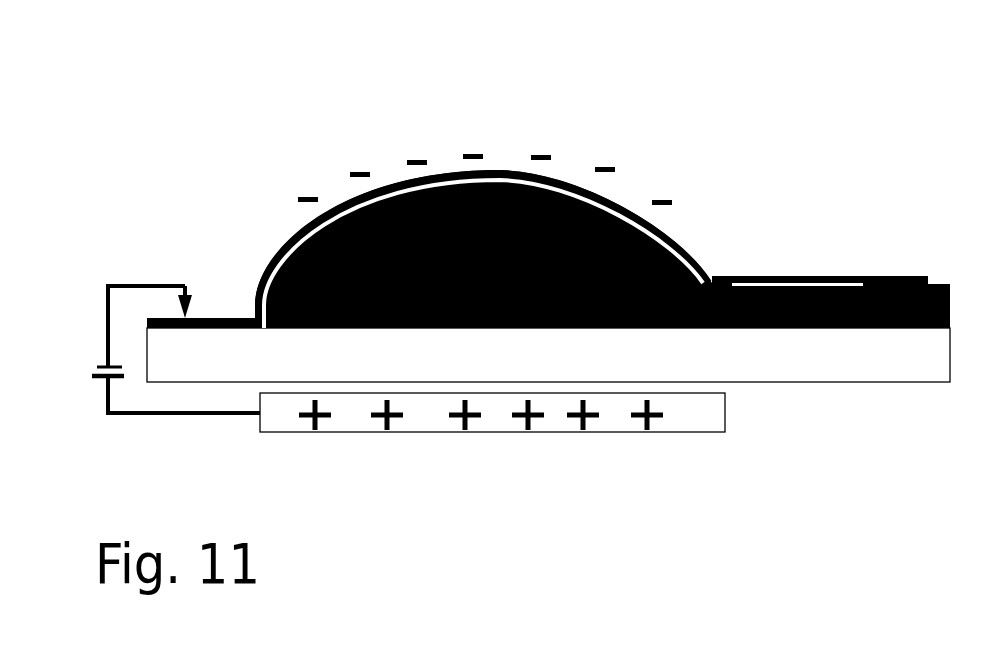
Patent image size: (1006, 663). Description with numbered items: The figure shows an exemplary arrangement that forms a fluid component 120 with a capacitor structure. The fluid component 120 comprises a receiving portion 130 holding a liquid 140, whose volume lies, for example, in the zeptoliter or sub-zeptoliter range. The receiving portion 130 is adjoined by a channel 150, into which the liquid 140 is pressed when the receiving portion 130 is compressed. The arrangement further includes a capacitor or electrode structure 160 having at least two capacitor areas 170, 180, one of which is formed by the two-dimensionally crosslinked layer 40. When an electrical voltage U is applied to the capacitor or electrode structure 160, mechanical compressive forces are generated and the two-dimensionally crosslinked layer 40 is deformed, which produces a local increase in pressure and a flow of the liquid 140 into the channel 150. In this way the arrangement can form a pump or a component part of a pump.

The fluid component 120 is at (363, 96).
The two-dimensionally crosslinked layer 40 is at (507, 172).
The receiving portion 130 is at (680, 240).
The liquid 140 is at (620, 195).
The capacitor area 170 is at (293, 240).
The capacitor or electrode structure 160 is at (273, 262).
The channel 150 is at (867, 277).
The capacitor area 180 is at (685, 425).